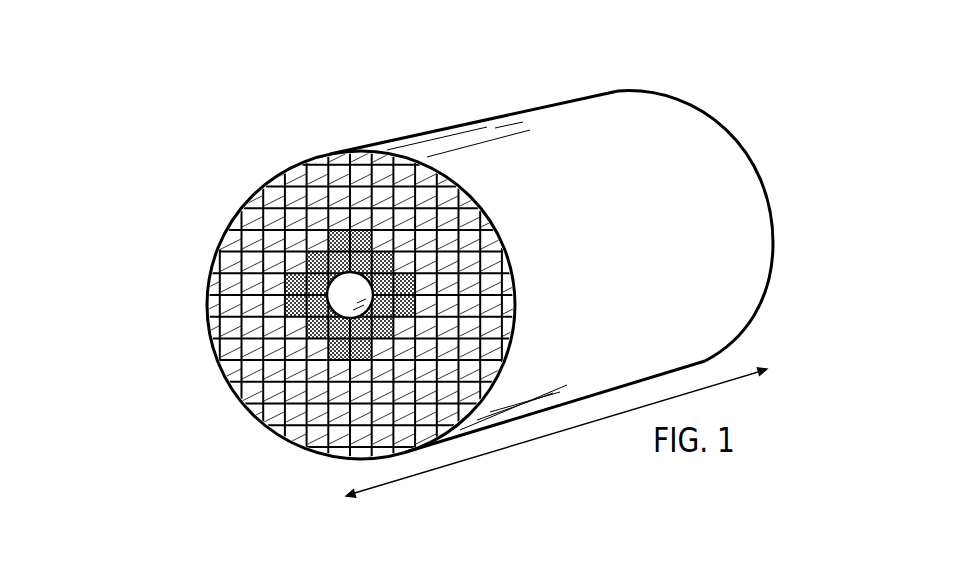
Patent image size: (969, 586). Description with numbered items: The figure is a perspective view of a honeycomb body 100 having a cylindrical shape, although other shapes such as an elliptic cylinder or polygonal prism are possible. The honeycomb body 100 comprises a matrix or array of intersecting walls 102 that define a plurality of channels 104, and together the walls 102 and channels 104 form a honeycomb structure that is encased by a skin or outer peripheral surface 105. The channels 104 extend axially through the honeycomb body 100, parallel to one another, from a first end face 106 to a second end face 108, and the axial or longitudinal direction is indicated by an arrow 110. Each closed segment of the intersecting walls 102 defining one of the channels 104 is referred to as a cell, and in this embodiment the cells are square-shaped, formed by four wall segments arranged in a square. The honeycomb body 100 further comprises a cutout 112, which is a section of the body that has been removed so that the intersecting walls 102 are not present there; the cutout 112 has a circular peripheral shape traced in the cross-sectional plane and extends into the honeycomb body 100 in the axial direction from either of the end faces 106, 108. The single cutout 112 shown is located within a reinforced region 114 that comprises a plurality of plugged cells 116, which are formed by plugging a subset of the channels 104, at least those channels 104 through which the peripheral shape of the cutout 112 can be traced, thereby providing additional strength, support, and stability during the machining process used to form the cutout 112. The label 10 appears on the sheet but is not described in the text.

The sheet/system reference 10 is at (46, 567).
The honeycomb body 100 is at (160, 181).
The intersecting walls 102 is at (320, 182).
The channels 104 is at (252, 390).
The outer peripheral surface 105 is at (618, 160).
The first end face 106 is at (113, 246).
The second end face 108 is at (785, 128).
The arrow 110 is at (470, 458).
The cutout 112 is at (373, 253).
The reinforced region 114 is at (425, 262).
The plugged cells 116 is at (338, 360).